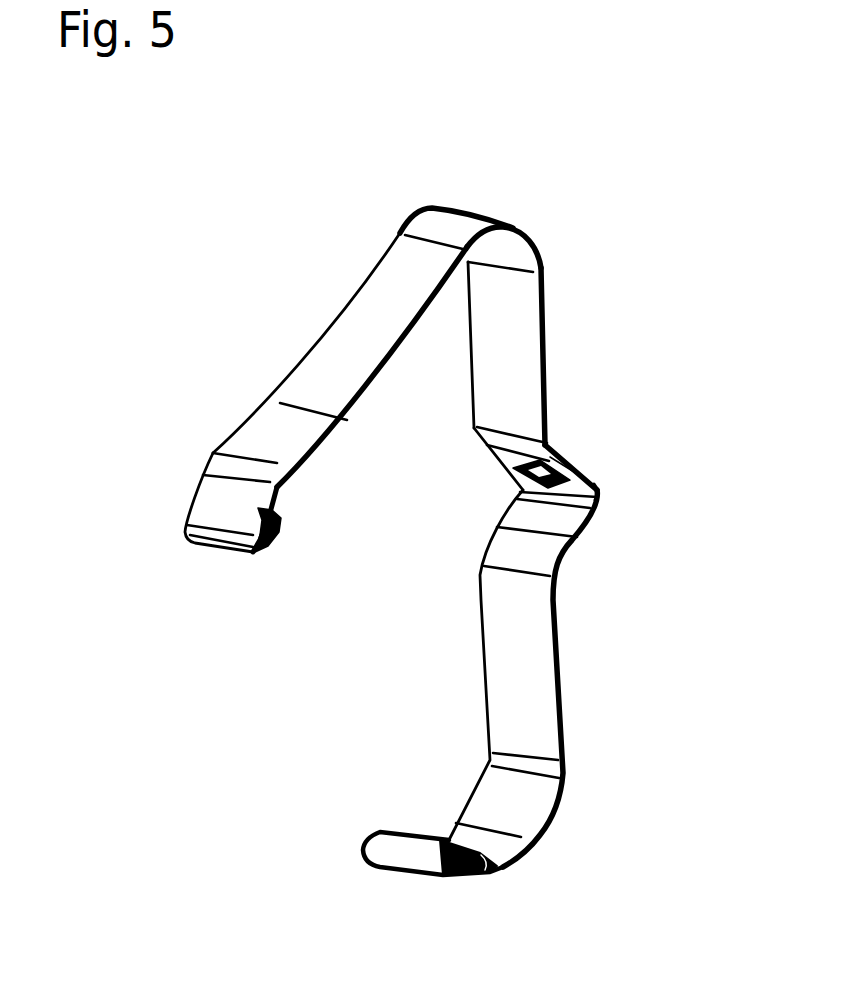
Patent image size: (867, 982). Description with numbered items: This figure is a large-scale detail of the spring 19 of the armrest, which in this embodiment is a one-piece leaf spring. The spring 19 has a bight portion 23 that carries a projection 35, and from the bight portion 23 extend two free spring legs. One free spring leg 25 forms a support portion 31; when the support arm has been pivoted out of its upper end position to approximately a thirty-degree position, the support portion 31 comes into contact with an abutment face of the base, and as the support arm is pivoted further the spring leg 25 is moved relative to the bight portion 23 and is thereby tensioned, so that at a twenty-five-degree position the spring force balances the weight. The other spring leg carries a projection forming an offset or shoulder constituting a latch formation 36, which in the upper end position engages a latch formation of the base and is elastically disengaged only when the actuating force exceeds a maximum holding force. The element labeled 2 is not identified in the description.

The spring clip 2 is at (458, 792).
The spring 19 is at (573, 310).
The bight portion 23 is at (583, 463).
The free spring leg 25 is at (365, 345).
The support portion 31 is at (207, 455).
The projection 35 is at (611, 497).
The latch formation 36 is at (487, 872).